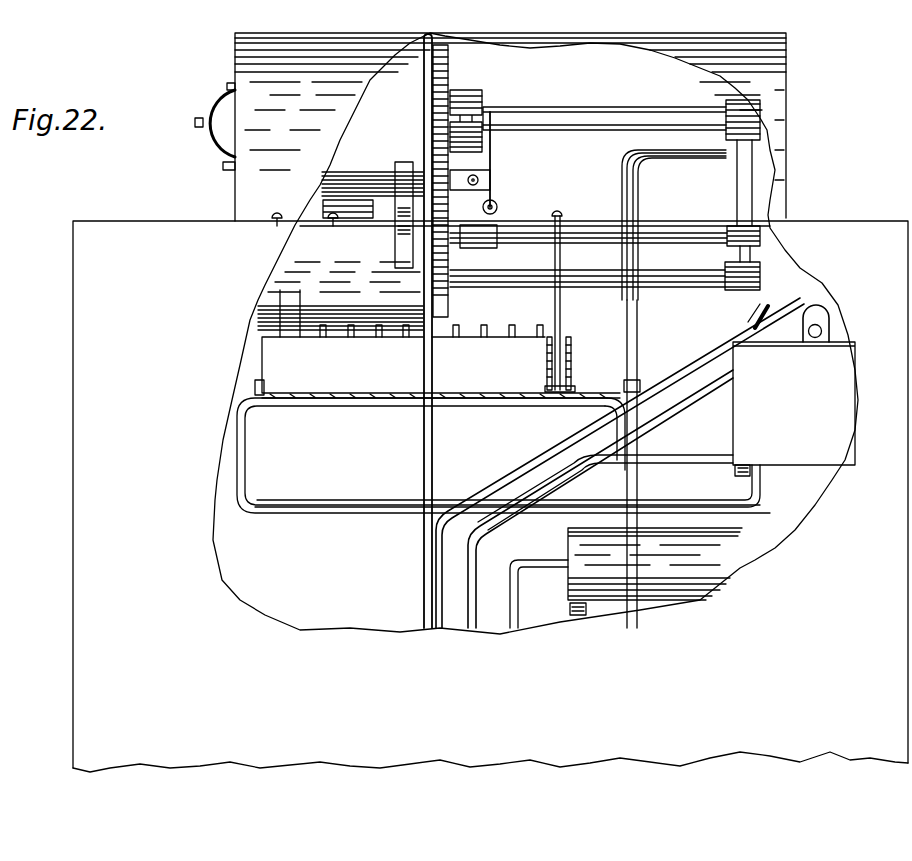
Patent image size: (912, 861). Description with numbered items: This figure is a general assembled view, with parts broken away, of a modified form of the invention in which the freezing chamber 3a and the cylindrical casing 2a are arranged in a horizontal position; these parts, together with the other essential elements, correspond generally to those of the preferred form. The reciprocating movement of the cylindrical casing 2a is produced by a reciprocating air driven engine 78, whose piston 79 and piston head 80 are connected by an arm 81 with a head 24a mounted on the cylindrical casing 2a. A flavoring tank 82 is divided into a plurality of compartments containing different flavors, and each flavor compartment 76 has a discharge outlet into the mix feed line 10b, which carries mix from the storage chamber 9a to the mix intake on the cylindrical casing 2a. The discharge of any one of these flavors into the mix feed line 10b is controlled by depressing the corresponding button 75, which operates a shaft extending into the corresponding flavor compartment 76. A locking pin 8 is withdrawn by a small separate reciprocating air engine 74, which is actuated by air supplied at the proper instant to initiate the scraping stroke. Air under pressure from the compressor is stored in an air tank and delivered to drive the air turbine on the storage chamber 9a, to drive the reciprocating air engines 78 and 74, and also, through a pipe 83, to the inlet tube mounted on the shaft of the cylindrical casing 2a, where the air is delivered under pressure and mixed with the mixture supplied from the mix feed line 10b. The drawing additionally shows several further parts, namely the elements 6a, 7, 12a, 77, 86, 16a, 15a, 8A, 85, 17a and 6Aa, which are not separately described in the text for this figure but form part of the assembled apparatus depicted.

The freezing chamber 3a is at (345, 48).
The knob 6a is at (214, 144).
The gear 7 is at (467, 96).
The locking pin 8 is at (493, 140).
The cylindrical casing 2a is at (576, 114).
The head 24a is at (727, 100).
The arm 81 is at (737, 218).
The piston head 80 is at (768, 282).
The pipe 12a is at (712, 176).
The pipe 83 is at (639, 306).
The rod 77 is at (561, 273).
The piston 79 is at (662, 275).
The block 86 is at (500, 248).
The button 75 is at (563, 213).
The flavor compartment 76 is at (563, 341).
The reciprocating air engine 74 is at (333, 214).
The reciprocating air driven engine 78 is at (332, 258).
The flavoring tank 82 is at (483, 382).
The mix feed line 10b is at (245, 472).
The enclosure 16a is at (720, 460).
The pipe 15a is at (655, 398).
The cap 8A is at (826, 311).
The pin 85 is at (766, 309).
The valve 17a is at (822, 331).
The storage chamber 9a is at (797, 420).
The lower box 6Aa is at (738, 572).